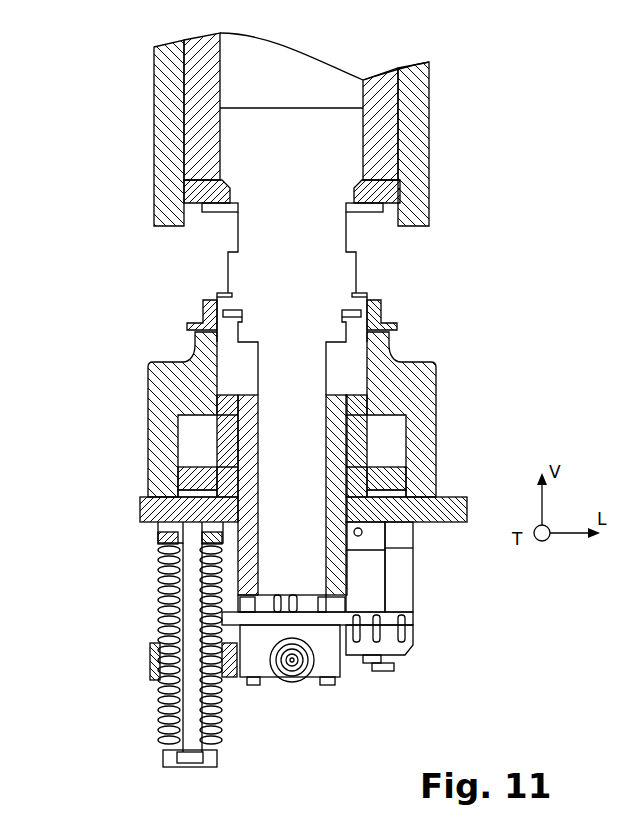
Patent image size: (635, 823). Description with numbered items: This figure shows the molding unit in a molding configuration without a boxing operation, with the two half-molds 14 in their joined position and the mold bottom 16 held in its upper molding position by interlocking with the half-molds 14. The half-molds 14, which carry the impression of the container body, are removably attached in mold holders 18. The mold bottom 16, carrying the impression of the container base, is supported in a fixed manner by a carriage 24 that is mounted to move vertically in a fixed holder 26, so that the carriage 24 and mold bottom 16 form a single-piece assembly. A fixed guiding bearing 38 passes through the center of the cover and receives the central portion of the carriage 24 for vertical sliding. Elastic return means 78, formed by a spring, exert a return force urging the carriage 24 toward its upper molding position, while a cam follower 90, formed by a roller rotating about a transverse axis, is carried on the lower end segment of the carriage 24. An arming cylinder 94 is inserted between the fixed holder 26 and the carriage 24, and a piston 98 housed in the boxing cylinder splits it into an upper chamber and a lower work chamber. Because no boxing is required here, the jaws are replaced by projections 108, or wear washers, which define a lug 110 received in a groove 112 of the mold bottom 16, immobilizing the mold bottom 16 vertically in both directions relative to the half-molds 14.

The half-molds 14 is at (385, 145).
The mold bottom 16 is at (243, 147).
The mold holders 18 is at (418, 110).
The carriage 24 is at (293, 412).
The fixed holder 26 is at (146, 400).
The guiding bearing 38 is at (362, 551).
The elastic return means 78 is at (165, 700).
The cam follower 90 is at (292, 682).
The cylinder 94 is at (397, 588).
The piston 98 is at (197, 468).
The projections 108 is at (360, 186).
The lug 110 is at (195, 190).
The groove 112 is at (385, 195).